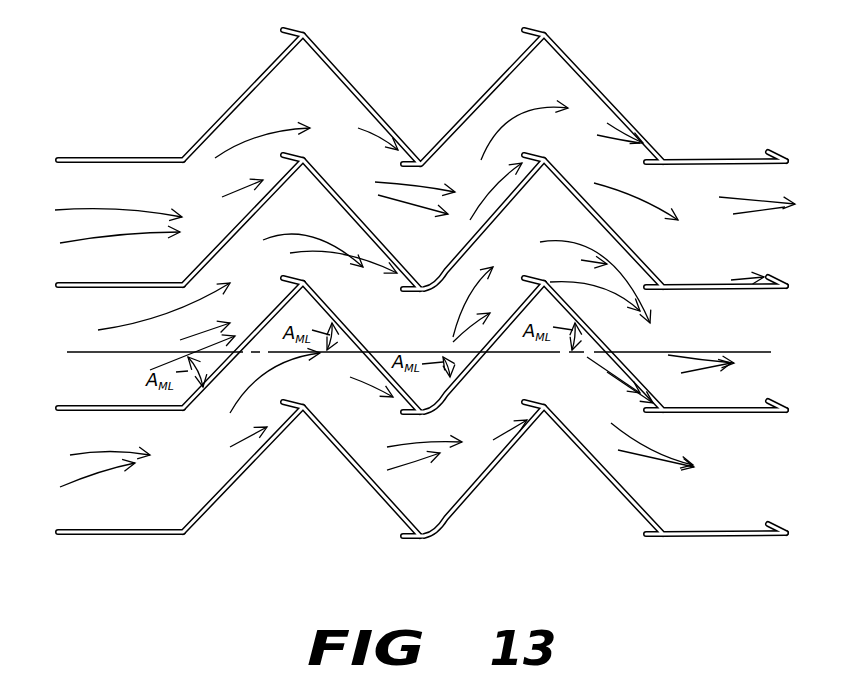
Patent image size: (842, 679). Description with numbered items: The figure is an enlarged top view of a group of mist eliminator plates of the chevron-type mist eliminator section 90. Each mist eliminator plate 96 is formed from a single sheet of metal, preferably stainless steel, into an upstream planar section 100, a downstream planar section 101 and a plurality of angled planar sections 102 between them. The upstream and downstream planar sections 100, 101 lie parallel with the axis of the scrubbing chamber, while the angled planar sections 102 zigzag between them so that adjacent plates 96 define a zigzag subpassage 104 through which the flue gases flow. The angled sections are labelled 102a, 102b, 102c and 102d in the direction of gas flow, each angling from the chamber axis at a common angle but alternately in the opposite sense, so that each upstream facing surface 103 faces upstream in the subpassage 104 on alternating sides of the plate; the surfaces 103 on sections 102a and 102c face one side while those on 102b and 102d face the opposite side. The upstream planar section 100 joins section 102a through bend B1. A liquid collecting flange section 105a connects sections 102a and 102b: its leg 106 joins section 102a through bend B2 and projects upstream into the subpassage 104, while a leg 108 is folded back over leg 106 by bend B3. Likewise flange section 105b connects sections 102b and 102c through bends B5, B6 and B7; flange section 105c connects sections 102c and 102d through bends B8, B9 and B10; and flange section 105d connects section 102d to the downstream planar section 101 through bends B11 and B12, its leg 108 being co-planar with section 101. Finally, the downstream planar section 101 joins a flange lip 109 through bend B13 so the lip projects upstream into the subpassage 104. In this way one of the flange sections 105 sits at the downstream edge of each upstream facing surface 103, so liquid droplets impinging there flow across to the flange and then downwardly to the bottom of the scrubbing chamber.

The chevron-type mist eliminator section 90 is at (215, 72).
The mist eliminator plate 96 is at (56, 159).
The upstream planar section 100 is at (110, 163).
The downstream planar section 101 is at (727, 164).
The angled planar section 102 is at (233, 114).
The first angled planar section 102a is at (201, 392).
The second angled planar section 102b is at (334, 313).
The third angled planar section 102c is at (469, 363).
The fourth angled planar section 102d is at (598, 334).
The upstream facing surface 103 is at (255, 352).
The zigzag subpassage 104 is at (82, 265).
The liquid collecting flange section 105 is at (290, 33).
The first liquid collecting flange section 105a is at (289, 276).
The second liquid collecting flange section 105b is at (402, 420).
The third liquid collecting flange section 105c is at (528, 277).
The fourth liquid collecting flange section 105d is at (650, 417).
The leg 106 is at (292, 288).
The leg 108 is at (300, 279).
The flange lip 109 is at (772, 152).
The bend B1 is at (192, 412).
The bend B2 is at (305, 319).
The bend B3 is at (283, 281).
The bend B5 is at (410, 396).
The bend B6 is at (398, 414).
The bend B7 is at (430, 413).
The bend B8 is at (540, 313).
The bend B9 is at (527, 284).
The bend B10 is at (548, 287).
The bend B11 is at (663, 406).
The bend B12 is at (650, 412).
The bend B13 is at (787, 410).